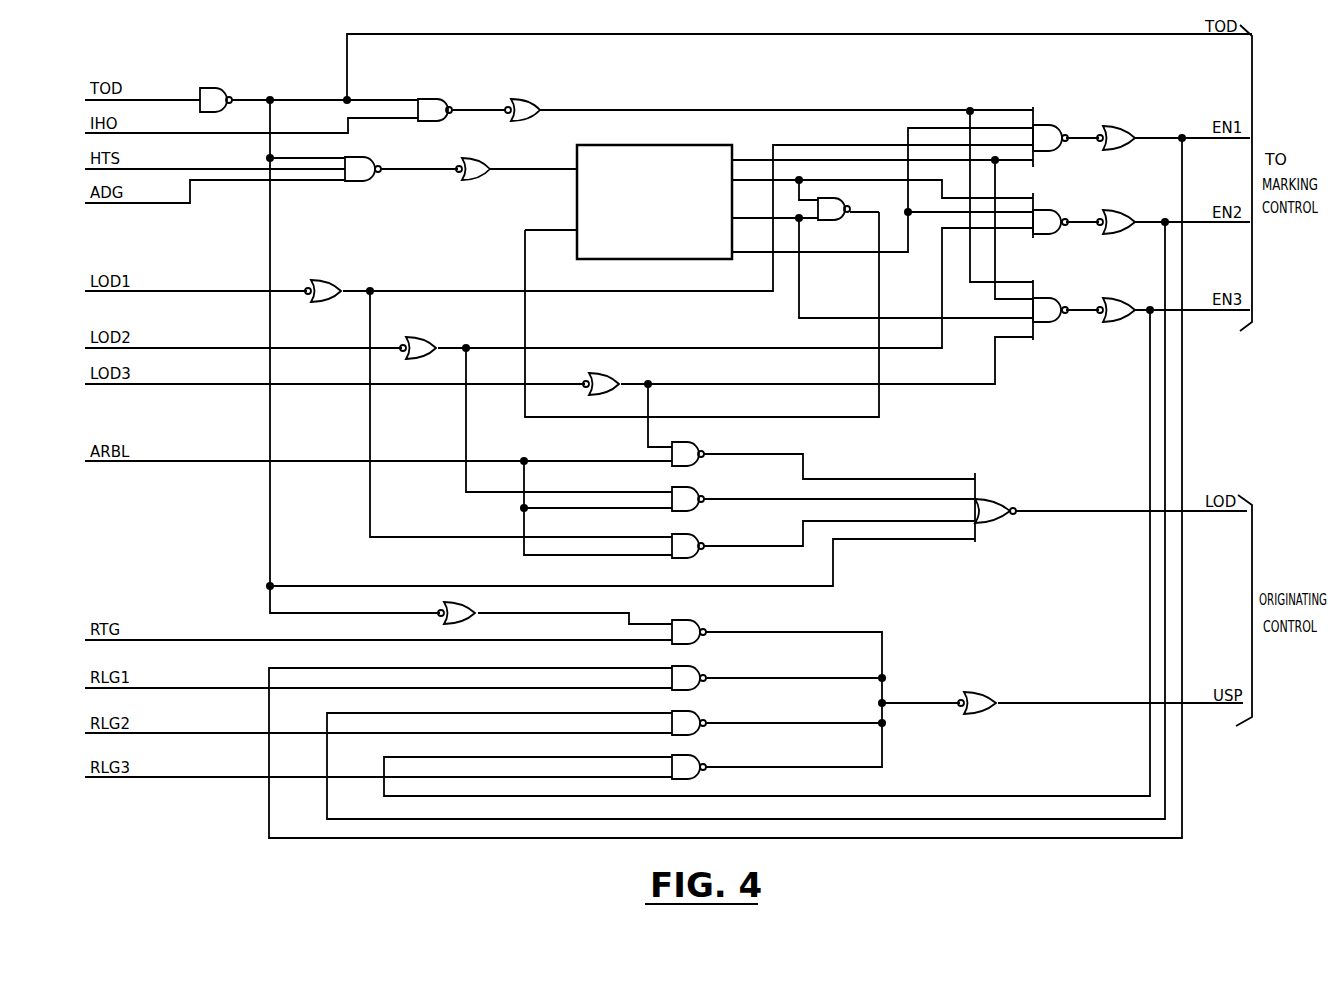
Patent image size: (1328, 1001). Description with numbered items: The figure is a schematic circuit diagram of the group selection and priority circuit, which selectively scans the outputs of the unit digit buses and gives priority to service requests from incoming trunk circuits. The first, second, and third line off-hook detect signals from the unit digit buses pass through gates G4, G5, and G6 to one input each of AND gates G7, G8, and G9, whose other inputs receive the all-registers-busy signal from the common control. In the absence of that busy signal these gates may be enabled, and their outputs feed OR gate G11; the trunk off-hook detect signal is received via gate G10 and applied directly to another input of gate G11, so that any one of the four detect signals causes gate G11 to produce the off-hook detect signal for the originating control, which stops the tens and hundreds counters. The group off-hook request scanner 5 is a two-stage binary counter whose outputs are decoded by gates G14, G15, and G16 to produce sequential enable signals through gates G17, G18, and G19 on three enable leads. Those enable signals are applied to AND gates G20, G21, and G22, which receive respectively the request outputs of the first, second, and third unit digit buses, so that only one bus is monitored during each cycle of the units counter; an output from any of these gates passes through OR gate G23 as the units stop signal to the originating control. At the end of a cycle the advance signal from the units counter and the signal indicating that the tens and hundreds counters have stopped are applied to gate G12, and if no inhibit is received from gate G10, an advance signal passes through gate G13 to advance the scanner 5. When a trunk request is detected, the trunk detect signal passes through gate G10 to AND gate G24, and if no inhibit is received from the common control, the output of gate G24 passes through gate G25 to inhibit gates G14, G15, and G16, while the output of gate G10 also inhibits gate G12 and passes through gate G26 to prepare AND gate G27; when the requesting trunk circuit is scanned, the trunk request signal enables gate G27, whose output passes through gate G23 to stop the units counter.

The group off-hook request scanner 5 is at (650, 145).
The gate G4 is at (322, 280).
The gate G5 is at (416, 337).
The gate G6 is at (597, 373).
The AND gate G7 is at (697, 445).
The AND gate G8 is at (697, 489).
The AND gate G9 is at (697, 536).
The gate G10 is at (215, 87).
The OR gate G11 is at (1000, 522).
The gate G12 is at (354, 182).
The gate G13 is at (466, 182).
The gate G14 is at (1046, 123).
The gate G15 is at (1050, 208).
The gate G16 is at (1052, 322).
The gate G17 is at (1118, 123).
The gate G18 is at (1115, 208).
The gate G19 is at (1112, 322).
The AND gate G20 is at (700, 668).
The AND gate G21 is at (700, 713).
The AND gate G22 is at (700, 758).
The OR gate G23 is at (986, 714).
The AND gate G24 is at (424, 98).
The gate G25 is at (528, 98).
The gate G26 is at (462, 601).
The AND gate G27 is at (700, 622).